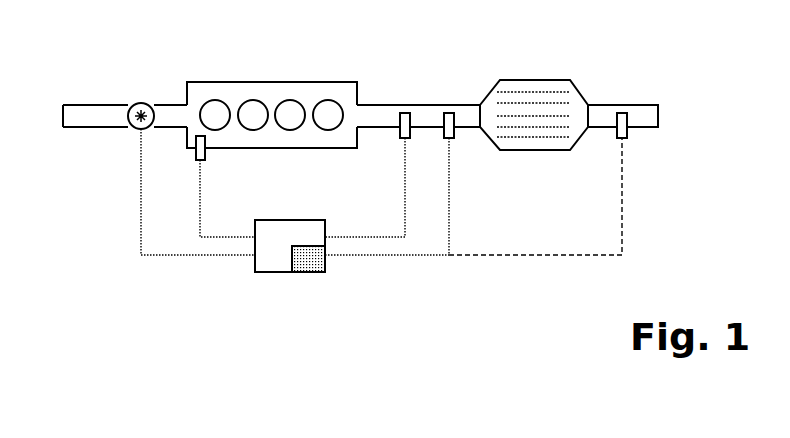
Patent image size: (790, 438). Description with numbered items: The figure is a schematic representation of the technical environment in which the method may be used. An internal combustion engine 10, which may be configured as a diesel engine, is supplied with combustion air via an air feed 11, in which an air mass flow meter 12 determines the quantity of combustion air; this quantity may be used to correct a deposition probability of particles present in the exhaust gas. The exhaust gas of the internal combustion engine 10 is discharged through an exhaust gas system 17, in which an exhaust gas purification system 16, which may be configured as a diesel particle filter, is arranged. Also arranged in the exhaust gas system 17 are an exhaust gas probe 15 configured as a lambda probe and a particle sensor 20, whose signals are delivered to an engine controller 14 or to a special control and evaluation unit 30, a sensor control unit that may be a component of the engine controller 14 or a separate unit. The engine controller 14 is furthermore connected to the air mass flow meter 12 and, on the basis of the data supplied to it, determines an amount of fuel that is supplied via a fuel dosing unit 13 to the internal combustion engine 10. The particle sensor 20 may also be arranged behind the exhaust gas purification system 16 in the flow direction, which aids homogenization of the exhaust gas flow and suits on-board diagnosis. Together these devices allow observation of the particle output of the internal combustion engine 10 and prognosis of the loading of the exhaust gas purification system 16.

The internal combustion engine 10 is at (270, 82).
The air feed 11 is at (98, 105).
The air mass flow meter 12 is at (135, 128).
The fuel dosing unit 13 is at (196, 155).
The engine controller 14 is at (270, 273).
The exhaust gas probe 15 is at (400, 136).
The exhaust gas purification system 16 is at (532, 80).
The exhaust gas system 17 is at (455, 74).
The particle sensor 20 is at (454, 136).
The control and evaluation unit 30 is at (312, 273).